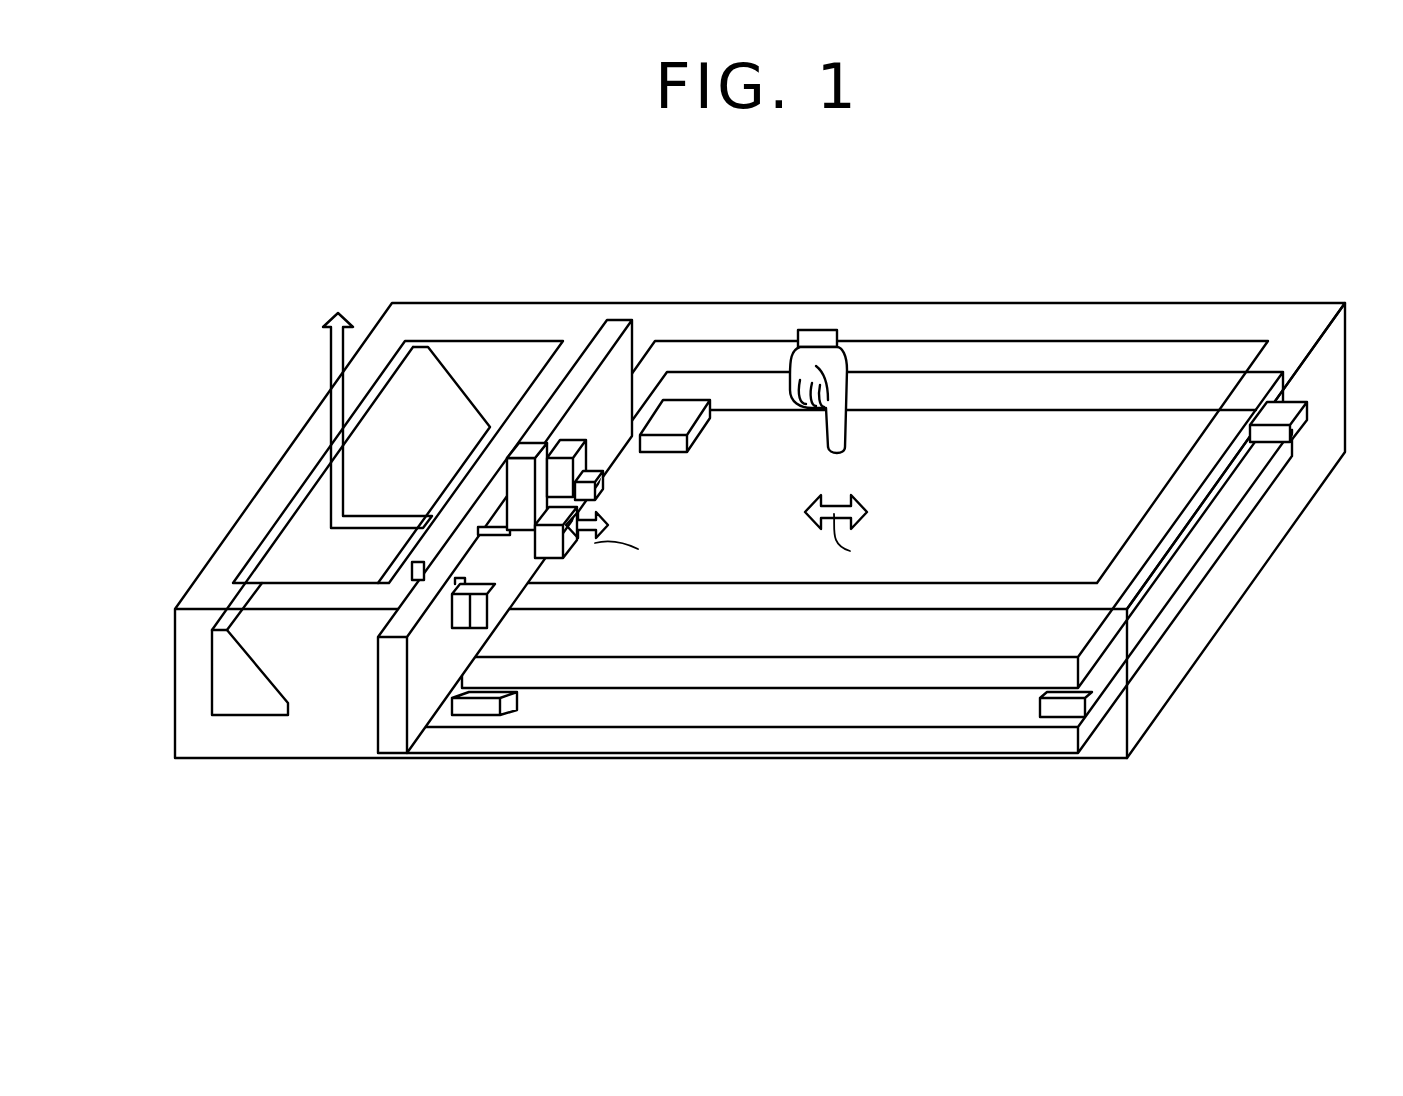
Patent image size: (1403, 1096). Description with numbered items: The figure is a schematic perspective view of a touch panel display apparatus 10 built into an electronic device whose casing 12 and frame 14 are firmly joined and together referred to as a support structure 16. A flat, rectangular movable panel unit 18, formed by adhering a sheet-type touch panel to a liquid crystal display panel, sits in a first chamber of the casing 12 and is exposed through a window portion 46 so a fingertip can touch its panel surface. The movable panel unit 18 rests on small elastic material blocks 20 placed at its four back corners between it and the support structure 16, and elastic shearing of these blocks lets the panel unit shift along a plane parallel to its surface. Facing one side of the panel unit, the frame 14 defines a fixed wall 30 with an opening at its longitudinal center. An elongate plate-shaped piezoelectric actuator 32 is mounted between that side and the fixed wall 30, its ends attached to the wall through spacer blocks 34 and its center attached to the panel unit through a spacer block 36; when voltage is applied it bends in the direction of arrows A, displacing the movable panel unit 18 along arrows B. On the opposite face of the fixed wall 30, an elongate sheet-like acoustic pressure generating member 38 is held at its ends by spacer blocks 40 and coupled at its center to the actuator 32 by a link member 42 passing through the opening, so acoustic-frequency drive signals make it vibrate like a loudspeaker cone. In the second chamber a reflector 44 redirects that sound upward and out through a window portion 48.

The touch panel display apparatus 10 is at (997, 240).
The casing 12 is at (1292, 343).
The frame 14 is at (933, 741).
The support structure 16 is at (1202, 697).
The movable panel unit 18 is at (655, 678).
The elastic material blocks 20 is at (677, 417).
The fixed wall 30 is at (598, 345).
The actuator 32 is at (520, 563).
The spacer blocks 34 is at (596, 472).
The spacer block 36 is at (587, 490).
The acoustic pressure generating member 38 is at (490, 507).
The spacer blocks 40 is at (515, 458).
The link member 42 is at (492, 540).
The reflector 44 is at (213, 702).
The window portion 46 is at (1112, 342).
The window portion 48 is at (298, 585).